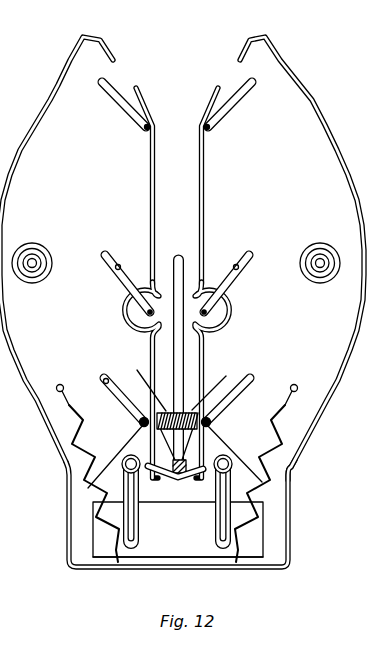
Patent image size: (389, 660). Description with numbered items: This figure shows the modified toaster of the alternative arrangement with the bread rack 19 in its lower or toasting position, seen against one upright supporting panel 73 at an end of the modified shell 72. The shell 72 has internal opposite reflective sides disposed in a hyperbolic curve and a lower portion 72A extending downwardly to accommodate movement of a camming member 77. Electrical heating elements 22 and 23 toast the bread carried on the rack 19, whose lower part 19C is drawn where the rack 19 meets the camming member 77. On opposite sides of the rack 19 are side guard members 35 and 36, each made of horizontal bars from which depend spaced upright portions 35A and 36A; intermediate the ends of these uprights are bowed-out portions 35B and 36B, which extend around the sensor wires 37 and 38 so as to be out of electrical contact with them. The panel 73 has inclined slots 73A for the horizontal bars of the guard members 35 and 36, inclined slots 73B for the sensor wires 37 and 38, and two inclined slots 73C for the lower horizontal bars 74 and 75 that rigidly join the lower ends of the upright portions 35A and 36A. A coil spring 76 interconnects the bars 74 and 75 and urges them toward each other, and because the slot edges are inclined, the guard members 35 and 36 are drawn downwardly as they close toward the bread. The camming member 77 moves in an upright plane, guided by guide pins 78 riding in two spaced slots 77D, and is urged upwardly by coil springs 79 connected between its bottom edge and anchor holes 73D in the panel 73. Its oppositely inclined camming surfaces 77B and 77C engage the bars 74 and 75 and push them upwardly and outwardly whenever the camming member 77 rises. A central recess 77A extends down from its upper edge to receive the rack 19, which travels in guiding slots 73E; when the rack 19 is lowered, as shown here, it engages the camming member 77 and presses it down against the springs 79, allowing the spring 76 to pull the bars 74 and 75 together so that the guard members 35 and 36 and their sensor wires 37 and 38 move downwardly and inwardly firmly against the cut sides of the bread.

The shell 72 is at (320, 110).
The lower portion 72A is at (288, 545).
The upright supporting panel 73 is at (186, 70).
The inclined slots 73A is at (117, 101).
The inclined slots 73B is at (122, 266).
The inclined slots 73C is at (100, 381).
The anchor holes 73D is at (298, 388).
The guiding slots 73E is at (225, 361).
The electrical heating element 22 is at (312, 243).
The electrical heating element 23 is at (18, 243).
The side guard member 35 is at (210, 129).
The upright portions 35A is at (204, 193).
The bowed-out portions 35B is at (228, 315).
The side guard member 36 is at (146, 130).
The upright portions 36A is at (150, 190).
The bowed-out portions 36B is at (127, 328).
The sensor wire 37 is at (207, 311).
The sensor wire 38 is at (148, 311).
The horizontal bar 74 is at (212, 422).
The horizontal bar 75 is at (138, 422).
The coil spring 76 is at (200, 393).
The camming member 77 is at (158, 543).
The central recess 77A is at (137, 372).
The camming surface 77B is at (223, 442).
The camming surface 77C is at (124, 448).
The slots 77D is at (166, 522).
The guide pins 78 is at (125, 474).
The coil springs 79 is at (291, 473).
The rack 19 is at (170, 481).
The lever block 19C is at (187, 474).